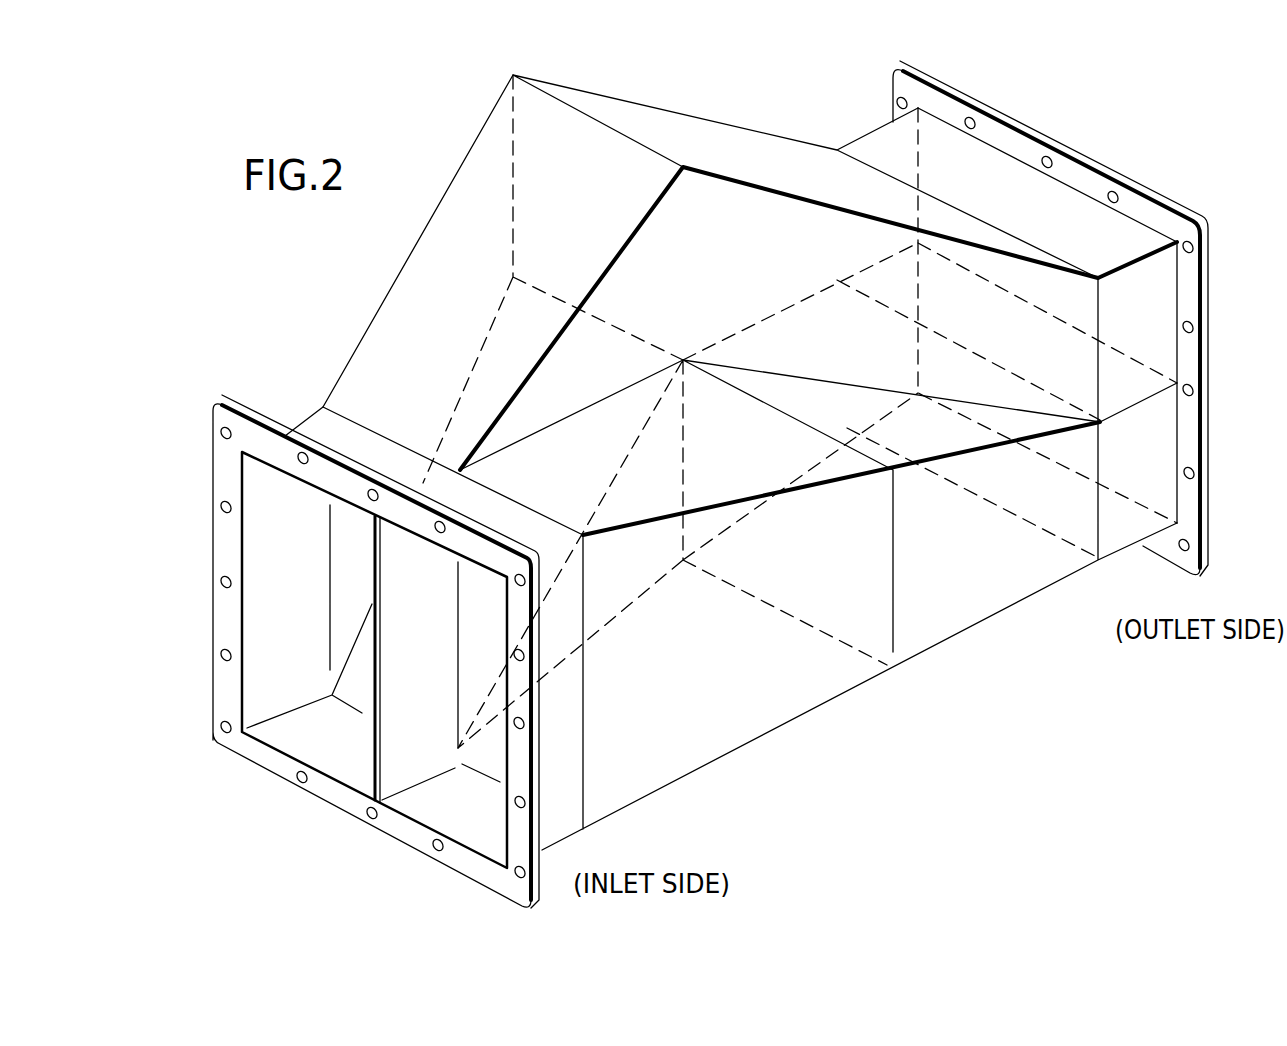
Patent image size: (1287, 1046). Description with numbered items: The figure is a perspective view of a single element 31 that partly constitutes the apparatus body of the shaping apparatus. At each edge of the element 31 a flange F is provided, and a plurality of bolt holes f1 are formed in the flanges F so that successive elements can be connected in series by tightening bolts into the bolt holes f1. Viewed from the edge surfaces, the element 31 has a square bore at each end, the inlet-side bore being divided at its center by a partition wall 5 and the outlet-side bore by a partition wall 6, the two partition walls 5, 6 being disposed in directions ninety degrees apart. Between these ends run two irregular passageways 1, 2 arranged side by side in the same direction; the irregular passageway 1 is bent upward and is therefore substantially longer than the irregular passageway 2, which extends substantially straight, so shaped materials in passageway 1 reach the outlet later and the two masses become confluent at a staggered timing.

The irregular passageway 1 is at (320, 736).
The irregular passageway 2 is at (435, 805).
The partition wall 5 is at (373, 583).
The partition wall 6 is at (1143, 363).
The element 31 is at (785, 140).
The flange F is at (220, 468).
The bolt hole f1 is at (220, 726).